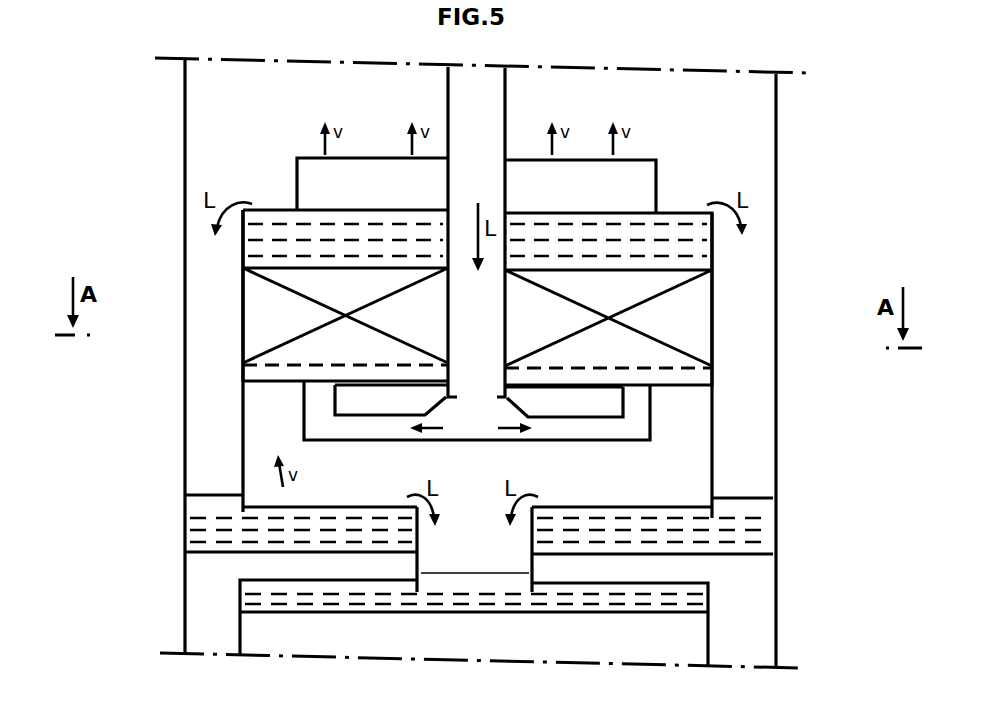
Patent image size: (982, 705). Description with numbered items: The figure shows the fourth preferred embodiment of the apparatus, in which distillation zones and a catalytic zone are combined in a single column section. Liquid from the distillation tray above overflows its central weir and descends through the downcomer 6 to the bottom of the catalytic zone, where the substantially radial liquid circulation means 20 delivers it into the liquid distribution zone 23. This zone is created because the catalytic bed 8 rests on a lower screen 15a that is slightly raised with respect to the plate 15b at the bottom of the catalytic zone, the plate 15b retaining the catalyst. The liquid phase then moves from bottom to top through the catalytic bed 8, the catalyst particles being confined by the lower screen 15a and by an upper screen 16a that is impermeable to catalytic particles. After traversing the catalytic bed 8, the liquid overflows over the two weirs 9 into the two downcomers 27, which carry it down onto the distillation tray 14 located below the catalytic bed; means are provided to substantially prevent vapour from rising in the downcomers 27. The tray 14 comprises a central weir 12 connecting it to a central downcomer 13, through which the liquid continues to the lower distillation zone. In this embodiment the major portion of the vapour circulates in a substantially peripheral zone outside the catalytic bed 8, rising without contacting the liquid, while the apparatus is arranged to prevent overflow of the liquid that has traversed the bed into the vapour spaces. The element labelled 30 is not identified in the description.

The downcomer 6 is at (476, 232).
The catalytic bed 8 is at (354, 303).
The weir 9 is at (247, 222).
The central weir 12 is at (433, 548).
The downcomer 13 is at (500, 552).
The distillation tray 14 is at (215, 550).
The lower screen 15a is at (678, 368).
The plate 15b is at (657, 388).
The upper screen 16a is at (378, 268).
The substantially radial liquid circulation means 20 is at (552, 457).
The liquid distribution zone 23 is at (243, 368).
The downcomers 27 is at (213, 278).
The partition wall 30 is at (240, 472).